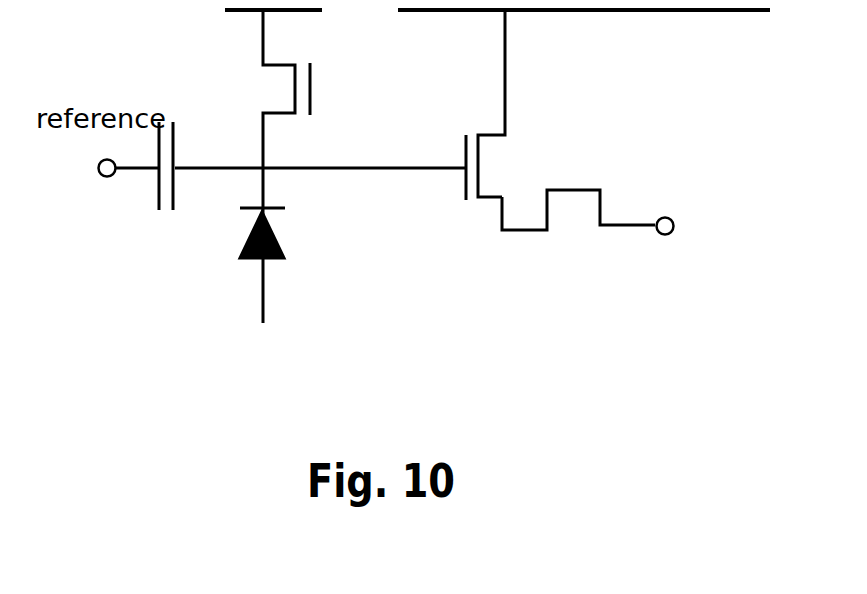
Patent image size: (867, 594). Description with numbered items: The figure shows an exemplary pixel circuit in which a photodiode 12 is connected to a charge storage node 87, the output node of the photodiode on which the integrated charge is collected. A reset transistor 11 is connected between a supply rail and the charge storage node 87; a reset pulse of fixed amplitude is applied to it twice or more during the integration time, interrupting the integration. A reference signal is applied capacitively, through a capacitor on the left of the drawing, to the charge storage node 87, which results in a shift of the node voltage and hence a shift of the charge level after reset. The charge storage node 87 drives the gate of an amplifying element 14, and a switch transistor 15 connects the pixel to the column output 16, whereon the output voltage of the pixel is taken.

The reset transistor 11 is at (325, 89).
The charge storage node 87 is at (364, 150).
The photodiode 12 is at (296, 245).
The amplifying element 14 is at (452, 116).
The switch transistor 15 is at (578, 185).
The column output 16 is at (675, 256).